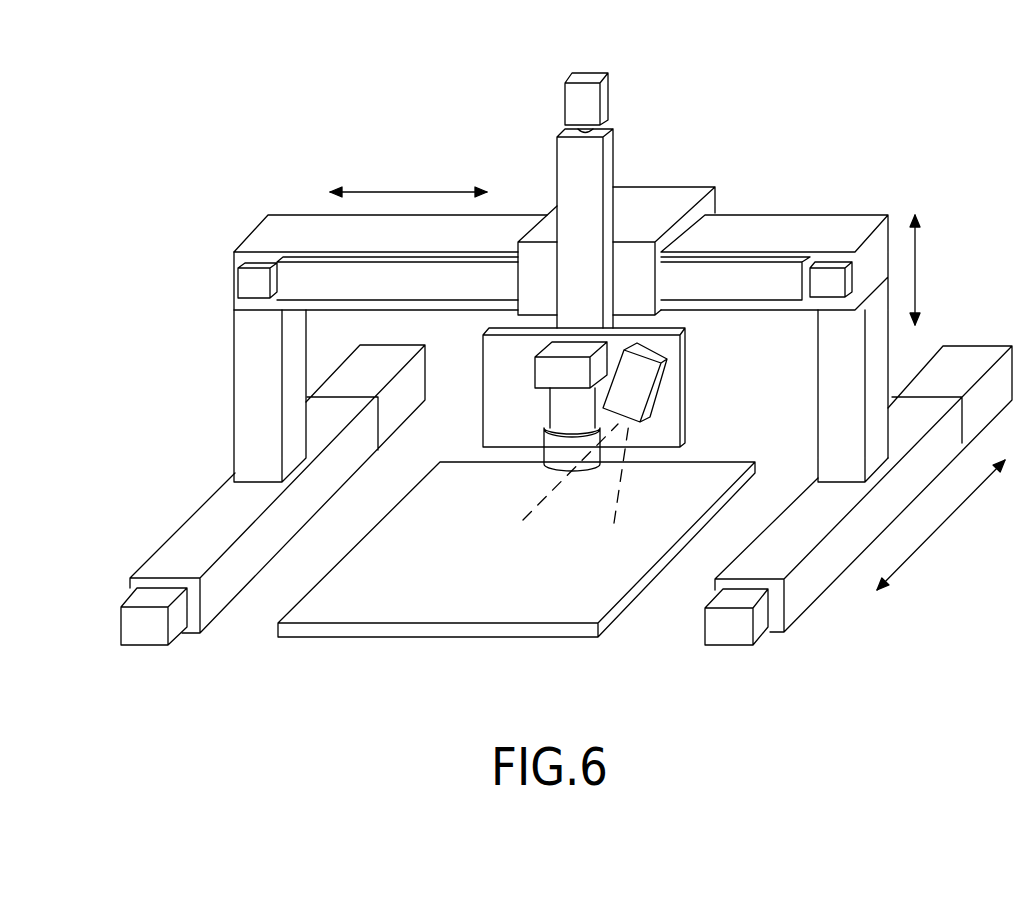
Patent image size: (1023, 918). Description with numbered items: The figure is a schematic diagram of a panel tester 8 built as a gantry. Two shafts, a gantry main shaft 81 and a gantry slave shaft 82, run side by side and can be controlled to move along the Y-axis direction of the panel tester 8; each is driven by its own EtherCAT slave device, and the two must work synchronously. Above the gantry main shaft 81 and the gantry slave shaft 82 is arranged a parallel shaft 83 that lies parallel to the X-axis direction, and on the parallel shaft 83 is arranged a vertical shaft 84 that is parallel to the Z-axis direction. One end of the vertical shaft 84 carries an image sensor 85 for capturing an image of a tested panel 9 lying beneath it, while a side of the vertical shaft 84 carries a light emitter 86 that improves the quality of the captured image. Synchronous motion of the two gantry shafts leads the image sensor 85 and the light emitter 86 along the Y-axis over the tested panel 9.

The panel tester 8 is at (748, 63).
The tested panel 9 is at (428, 597).
The gantry main shaft 81 is at (188, 542).
The gantry slave shaft 82 is at (810, 584).
The parallel shaft 83 is at (788, 232).
The vertical shaft 84 is at (582, 163).
The image sensor 85 is at (563, 407).
The light emitter 86 is at (637, 382).